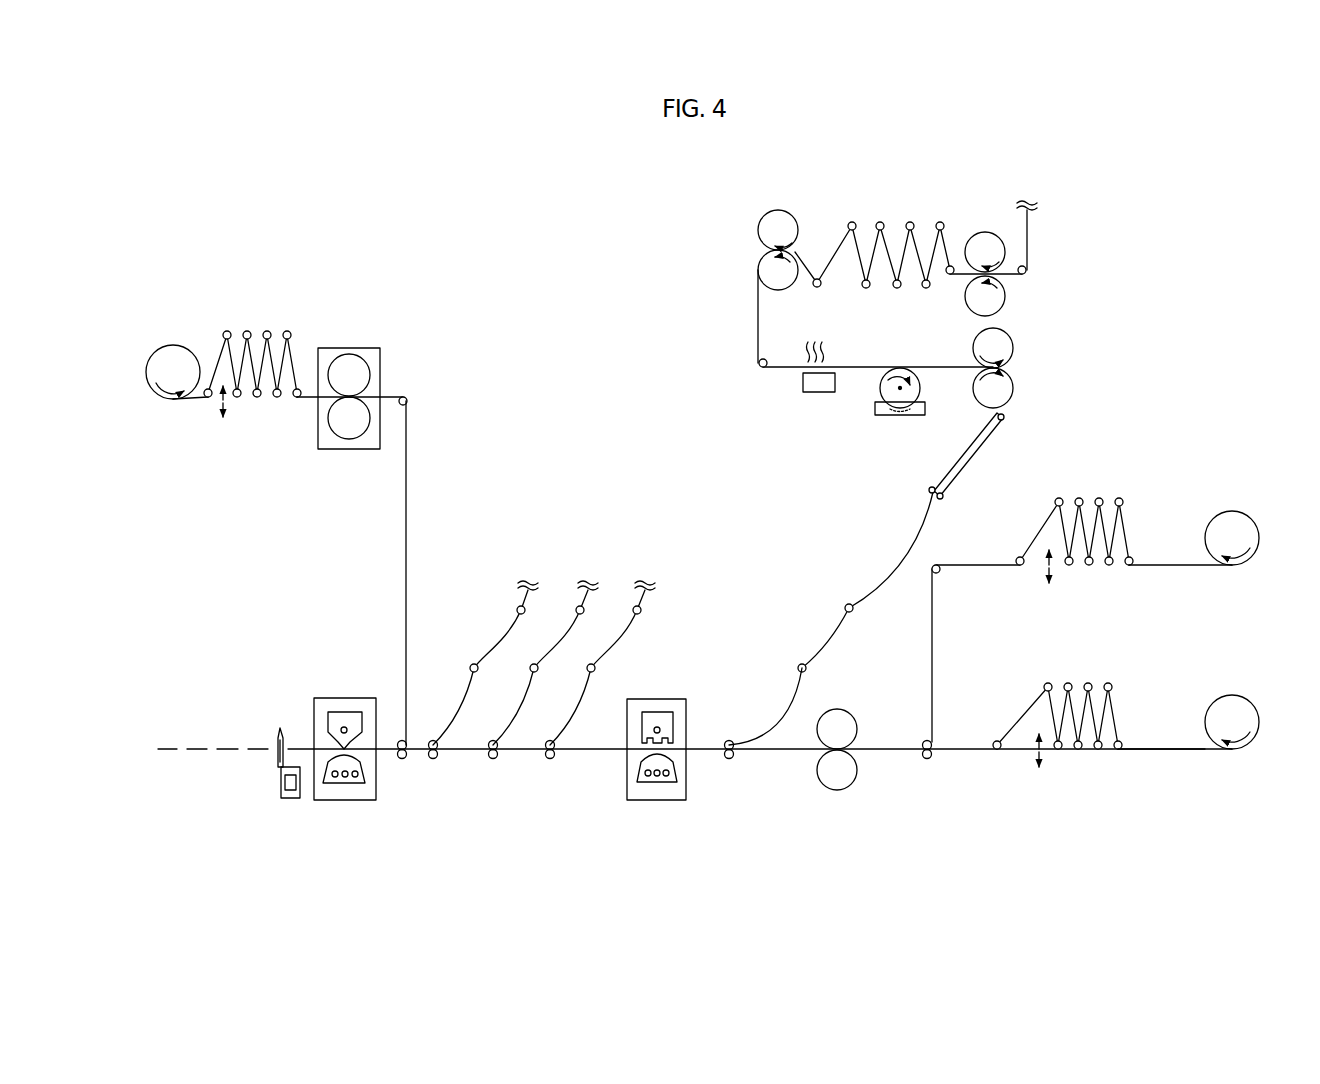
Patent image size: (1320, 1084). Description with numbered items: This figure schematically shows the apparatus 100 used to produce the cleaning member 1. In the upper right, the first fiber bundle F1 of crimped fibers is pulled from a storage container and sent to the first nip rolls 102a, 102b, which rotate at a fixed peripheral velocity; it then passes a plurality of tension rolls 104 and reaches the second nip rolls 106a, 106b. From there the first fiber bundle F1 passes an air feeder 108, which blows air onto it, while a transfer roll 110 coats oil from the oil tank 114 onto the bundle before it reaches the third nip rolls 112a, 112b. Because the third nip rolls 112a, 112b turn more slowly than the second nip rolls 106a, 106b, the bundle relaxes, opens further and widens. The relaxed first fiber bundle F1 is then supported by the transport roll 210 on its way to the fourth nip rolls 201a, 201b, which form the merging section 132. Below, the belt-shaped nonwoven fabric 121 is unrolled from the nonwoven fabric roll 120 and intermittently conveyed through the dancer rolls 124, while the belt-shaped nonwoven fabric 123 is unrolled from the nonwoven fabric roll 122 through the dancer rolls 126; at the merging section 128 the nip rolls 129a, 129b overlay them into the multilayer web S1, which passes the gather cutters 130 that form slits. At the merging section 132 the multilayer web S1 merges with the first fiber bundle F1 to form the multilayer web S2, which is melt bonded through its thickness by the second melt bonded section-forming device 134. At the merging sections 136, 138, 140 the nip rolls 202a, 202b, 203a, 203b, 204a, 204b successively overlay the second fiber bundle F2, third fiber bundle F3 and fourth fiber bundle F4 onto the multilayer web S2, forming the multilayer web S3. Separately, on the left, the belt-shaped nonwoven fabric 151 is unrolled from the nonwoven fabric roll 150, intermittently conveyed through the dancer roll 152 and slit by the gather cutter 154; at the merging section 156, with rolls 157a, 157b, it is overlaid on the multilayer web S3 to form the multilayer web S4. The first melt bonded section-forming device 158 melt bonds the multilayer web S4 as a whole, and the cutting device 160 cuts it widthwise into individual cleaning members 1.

The cleaning member 1 is at (258, 750).
The apparatus 100 is at (1124, 216).
The first nip roll 102a is at (985, 232).
The first nip roll 102b is at (1005, 293).
The tension rolls 104 is at (910, 222).
The second nip roll 106a is at (778, 210).
The second nip roll 106b is at (790, 288).
The air feeder 108 is at (802, 384).
The transfer roll 110 is at (880, 393).
The third nip roll 112a is at (1012, 344).
The third nip roll 112b is at (1012, 388).
The oil tank 114 is at (893, 416).
The nonwoven fabric roll 120 is at (1232, 698).
The belt-shaped nonwoven fabric 121 is at (1148, 748).
The nonwoven fabric roll 122 is at (1232, 514).
The belt-shaped nonwoven fabric 123 is at (1150, 565).
The dancer rolls 124 is at (1079, 672).
The dancer rolls 126 is at (1081, 487).
The merging section 128 is at (939, 744).
The belt-shaped nonwoven fabric nip roll 129a is at (922, 745).
The belt-shaped nonwoven fabric nip roll 129b is at (932, 758).
The gather cutters 130 is at (833, 716).
The merging section 132 is at (738, 757).
The second melt bonded section-forming device 134 is at (660, 698).
The merging section 136 is at (561, 757).
The merging section 138 is at (501, 757).
The merging section 140 is at (442, 756).
The nonwoven fabric roll 150 is at (170, 356).
The belt-shaped nonwoven fabric 151 is at (190, 400).
The dancer roll 152 is at (279, 317).
The gather cutter 154 is at (359, 336).
The merging section 156 is at (401, 768).
The nip roll 157a is at (398, 741).
The nip roll 157b is at (399, 760).
The first melt bonded section-forming device 158 is at (326, 698).
The cutting device 160 is at (291, 799).
The fourth nip roll 201a is at (752, 720).
The fourth nip roll 201b is at (732, 759).
The nip roll 202a is at (550, 740).
The nip roll 202b is at (553, 759).
The nip roll 203a is at (493, 740).
The nip roll 203b is at (495, 759).
The nip roll 204a is at (433, 740).
The nip roll 204b is at (433, 759).
The transport roll 210 is at (845, 605).
The first fiber bundle F1 is at (1028, 243).
The second fiber bundle F2 is at (648, 596).
The third fiber bundle F3 is at (590, 596).
The fourth fiber bundle F4 is at (531, 596).
The multilayer web S1 is at (888, 745).
The multilayer web S2 is at (708, 745).
The multilayer web S3 is at (416, 760).
The multilayer web S4 is at (396, 746).